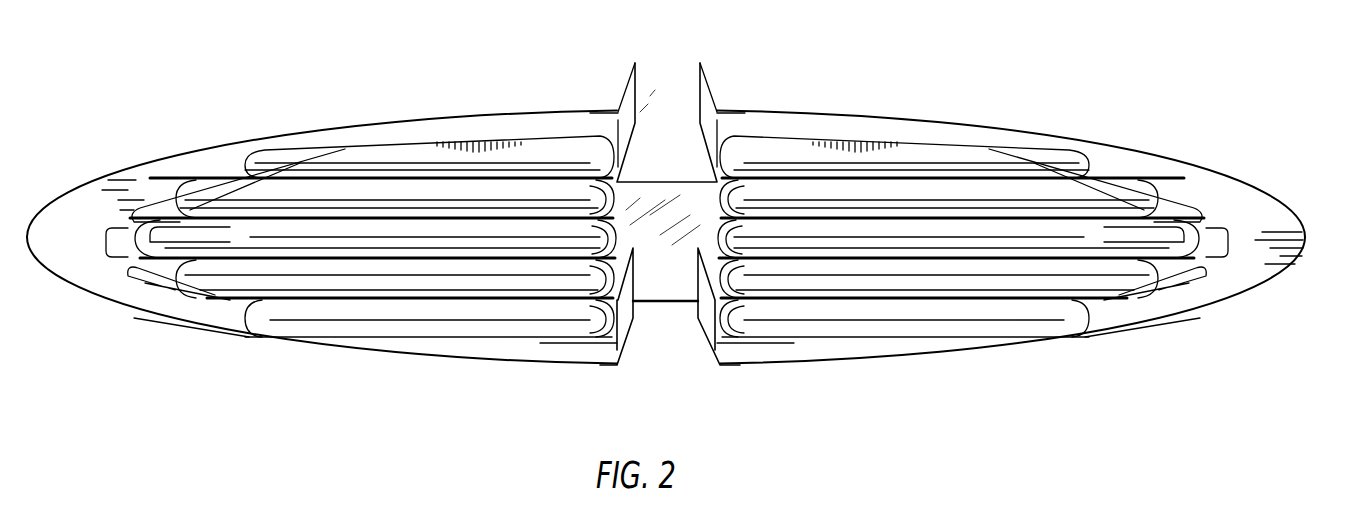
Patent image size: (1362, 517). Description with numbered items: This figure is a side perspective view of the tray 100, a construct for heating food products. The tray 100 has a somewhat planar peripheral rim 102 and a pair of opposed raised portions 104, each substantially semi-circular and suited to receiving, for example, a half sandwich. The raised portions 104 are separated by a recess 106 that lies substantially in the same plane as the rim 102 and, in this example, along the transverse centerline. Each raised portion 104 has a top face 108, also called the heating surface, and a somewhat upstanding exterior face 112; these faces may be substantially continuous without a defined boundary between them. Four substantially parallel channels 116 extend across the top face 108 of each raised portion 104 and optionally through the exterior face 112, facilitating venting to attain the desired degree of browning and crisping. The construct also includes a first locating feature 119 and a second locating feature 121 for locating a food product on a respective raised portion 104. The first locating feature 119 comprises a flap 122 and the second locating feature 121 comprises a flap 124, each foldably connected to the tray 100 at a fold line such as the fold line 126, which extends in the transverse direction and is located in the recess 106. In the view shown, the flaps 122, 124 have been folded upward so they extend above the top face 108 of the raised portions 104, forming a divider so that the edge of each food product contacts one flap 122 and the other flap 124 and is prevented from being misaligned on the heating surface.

The tray 100 is at (448, 132).
The peripheral rim 102 is at (940, 340).
The raised portion 104 is at (915, 155).
The recess 106 is at (672, 254).
The top face 108 is at (393, 254).
The exterior face 112 is at (1232, 205).
The channel 116 is at (246, 170).
The first locating feature 119 is at (708, 264).
The second locating feature 121 is at (634, 82).
The flap 122 is at (612, 287).
The flap 124 is at (624, 104).
The fold line 126 is at (610, 320).